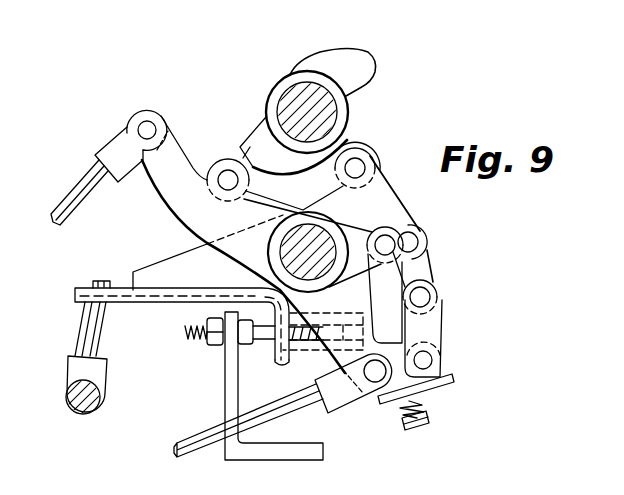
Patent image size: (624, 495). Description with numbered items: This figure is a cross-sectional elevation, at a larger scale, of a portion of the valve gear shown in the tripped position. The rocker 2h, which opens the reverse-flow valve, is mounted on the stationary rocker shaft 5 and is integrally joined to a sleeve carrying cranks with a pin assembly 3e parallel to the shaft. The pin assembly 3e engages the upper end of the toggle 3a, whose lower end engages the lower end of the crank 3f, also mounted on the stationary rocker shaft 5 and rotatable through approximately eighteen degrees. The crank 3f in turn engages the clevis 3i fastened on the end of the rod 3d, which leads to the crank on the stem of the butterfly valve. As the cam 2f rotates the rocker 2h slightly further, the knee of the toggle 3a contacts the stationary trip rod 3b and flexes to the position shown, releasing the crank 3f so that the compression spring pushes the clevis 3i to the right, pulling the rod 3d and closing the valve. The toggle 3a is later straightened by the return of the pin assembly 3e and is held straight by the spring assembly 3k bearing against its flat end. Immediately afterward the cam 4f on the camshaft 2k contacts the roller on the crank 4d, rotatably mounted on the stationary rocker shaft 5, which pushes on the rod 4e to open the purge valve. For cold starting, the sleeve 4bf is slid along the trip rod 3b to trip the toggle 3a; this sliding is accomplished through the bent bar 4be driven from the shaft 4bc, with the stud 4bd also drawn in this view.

The camshaft 2k is at (283, 97).
The cam 2f is at (353, 68).
The rocker 2h is at (170, 262).
The crank 4d is at (167, 177).
The rod 4e is at (83, 188).
The cam 4f is at (279, 162).
The stud 4bd is at (102, 282).
The bent bar 4be is at (120, 305).
The shaft 4bc is at (100, 402).
The sleeve 4bf is at (300, 360).
The stationary rocker shaft 5 is at (290, 262).
The toggle 3a is at (438, 298).
The stationary trip rod 3b is at (183, 337).
The rod 3d is at (205, 437).
The pin assembly 3e is at (382, 240).
The crank 3f is at (347, 292).
The clevis 3i is at (342, 403).
The spring assembly 3k is at (432, 399).